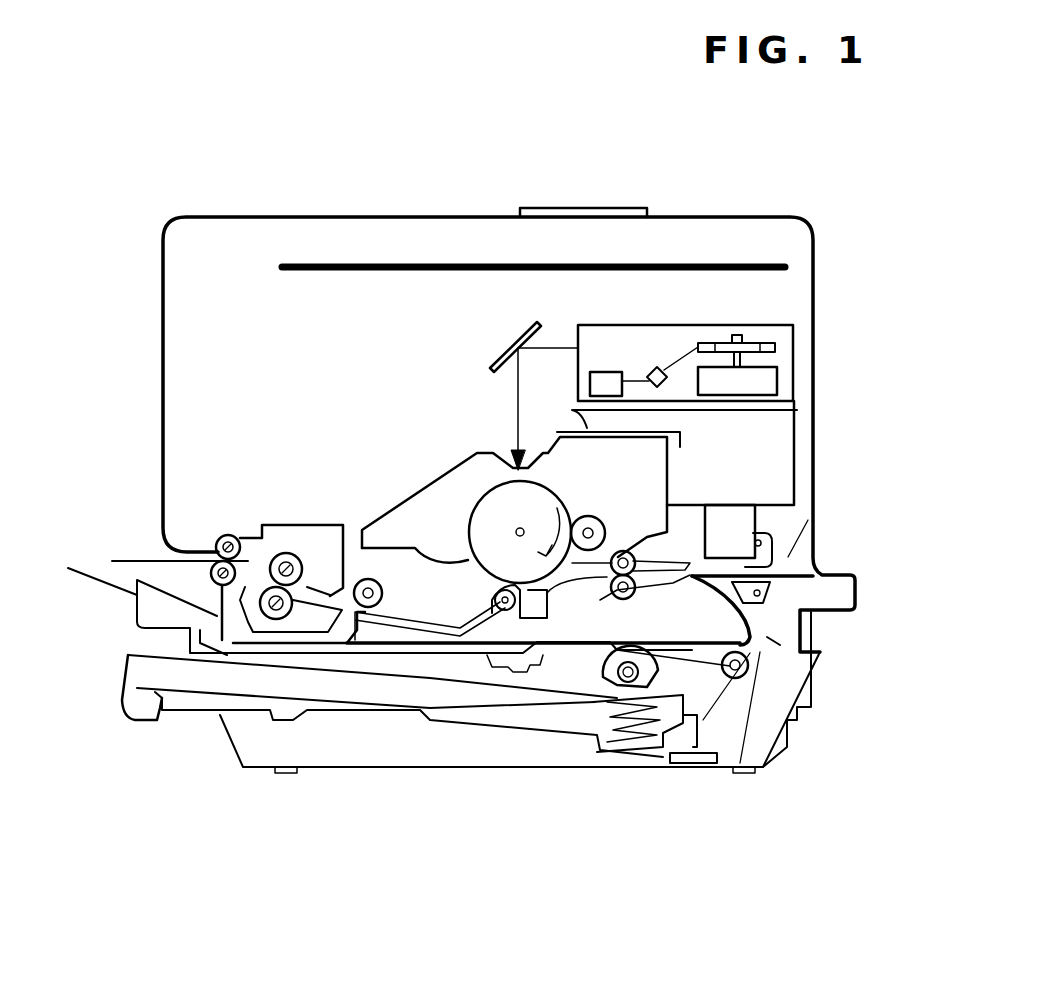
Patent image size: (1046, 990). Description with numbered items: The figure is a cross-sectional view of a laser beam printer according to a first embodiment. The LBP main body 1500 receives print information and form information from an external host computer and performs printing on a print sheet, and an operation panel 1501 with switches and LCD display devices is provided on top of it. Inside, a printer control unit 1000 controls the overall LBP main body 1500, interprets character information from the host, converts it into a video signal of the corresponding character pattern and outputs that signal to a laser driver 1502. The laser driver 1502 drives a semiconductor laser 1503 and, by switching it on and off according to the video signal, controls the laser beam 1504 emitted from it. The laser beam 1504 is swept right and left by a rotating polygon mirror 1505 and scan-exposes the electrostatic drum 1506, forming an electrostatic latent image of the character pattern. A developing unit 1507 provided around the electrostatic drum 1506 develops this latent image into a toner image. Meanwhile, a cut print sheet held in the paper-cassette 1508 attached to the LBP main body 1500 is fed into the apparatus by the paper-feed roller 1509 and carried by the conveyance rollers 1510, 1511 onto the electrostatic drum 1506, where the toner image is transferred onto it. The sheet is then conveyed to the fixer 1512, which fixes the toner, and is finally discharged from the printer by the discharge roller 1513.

The printer control unit 1000 is at (785, 267).
The LBP main body 1500 is at (750, 216).
The operation panel 1501 is at (595, 209).
The laser driver 1502 is at (590, 385).
The semiconductor laser 1503 is at (662, 386).
The laser beam 1504 is at (672, 345).
The rotating polygon mirror 1505 is at (777, 349).
The electrostatic drum 1506 is at (485, 505).
The developing unit 1507 is at (660, 482).
The paper-cassette 1508 is at (128, 680).
The paper-feed roller 1509 is at (613, 676).
The conveyance roller 1510 is at (741, 678).
The conveyance roller 1511 is at (620, 600).
The fixer 1512 is at (286, 553).
The discharge roller 1513 is at (226, 535).